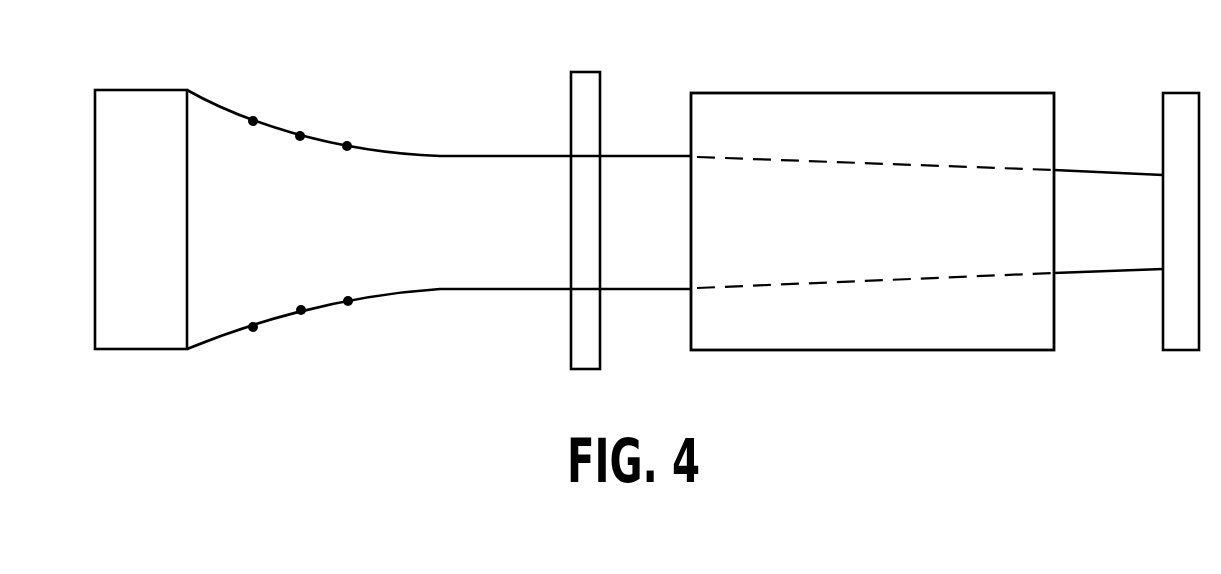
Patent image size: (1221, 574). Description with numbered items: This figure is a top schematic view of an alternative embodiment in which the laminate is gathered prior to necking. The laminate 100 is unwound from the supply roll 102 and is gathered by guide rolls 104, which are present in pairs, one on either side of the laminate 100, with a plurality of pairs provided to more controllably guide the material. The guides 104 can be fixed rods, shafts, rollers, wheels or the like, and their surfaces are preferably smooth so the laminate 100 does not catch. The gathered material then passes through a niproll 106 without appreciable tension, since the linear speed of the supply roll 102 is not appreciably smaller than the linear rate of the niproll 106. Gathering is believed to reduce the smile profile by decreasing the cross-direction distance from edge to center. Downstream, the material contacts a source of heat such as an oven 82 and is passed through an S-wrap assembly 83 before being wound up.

The laminate 100 is at (213, 128).
The supply roll 102 is at (137, 90).
The guide rolls 104 is at (253, 121).
The niproll 106 is at (585, 72).
The oven 82 is at (915, 350).
The S-wrap assembly 83 is at (1185, 350).